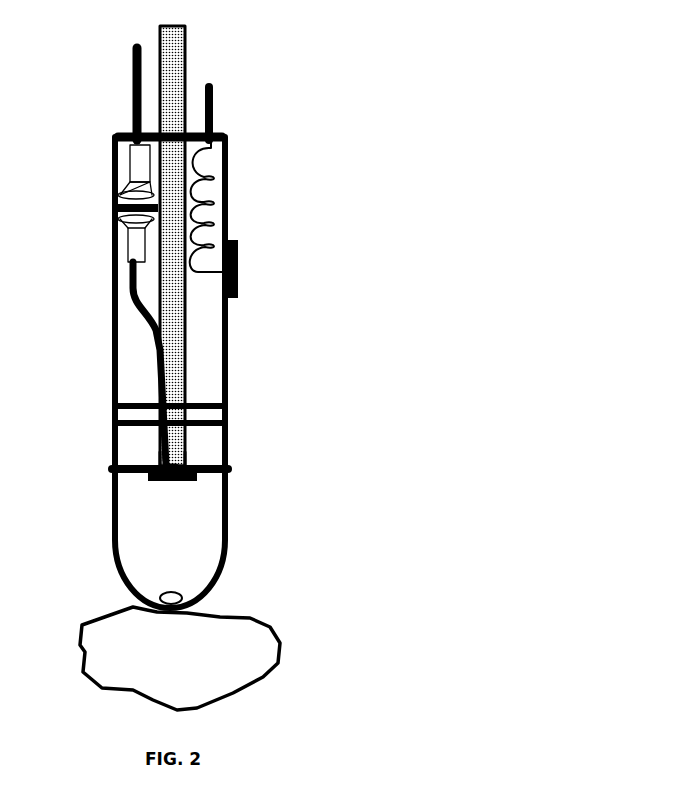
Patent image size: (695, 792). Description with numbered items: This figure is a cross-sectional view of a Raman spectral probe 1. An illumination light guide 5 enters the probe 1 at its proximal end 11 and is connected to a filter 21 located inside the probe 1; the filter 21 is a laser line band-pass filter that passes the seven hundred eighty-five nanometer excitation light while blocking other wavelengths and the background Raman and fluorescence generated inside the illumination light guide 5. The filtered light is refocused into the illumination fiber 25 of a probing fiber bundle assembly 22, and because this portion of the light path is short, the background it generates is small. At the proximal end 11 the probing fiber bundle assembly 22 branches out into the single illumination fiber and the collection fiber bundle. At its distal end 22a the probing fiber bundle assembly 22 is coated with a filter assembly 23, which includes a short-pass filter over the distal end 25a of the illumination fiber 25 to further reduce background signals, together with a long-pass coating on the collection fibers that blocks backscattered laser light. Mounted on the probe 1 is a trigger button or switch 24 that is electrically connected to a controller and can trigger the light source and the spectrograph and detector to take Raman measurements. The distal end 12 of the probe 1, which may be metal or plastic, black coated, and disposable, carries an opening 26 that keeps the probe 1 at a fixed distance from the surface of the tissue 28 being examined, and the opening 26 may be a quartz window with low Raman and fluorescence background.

The probe 1 is at (378, 88).
The illumination light guide 5 is at (130, 97).
The proximal end 11 is at (238, 140).
The distal end 12 is at (220, 576).
The filter 21 is at (120, 197).
The probing fiber bundle assembly 22 is at (188, 58).
The distal end 22a is at (203, 479).
The filter assembly 23 is at (157, 486).
The trigger button or switch 24 is at (243, 263).
The illumination fiber 25 is at (130, 298).
The distal end 25a is at (184, 463).
The opening 26 is at (150, 598).
The tissue 28 is at (191, 664).